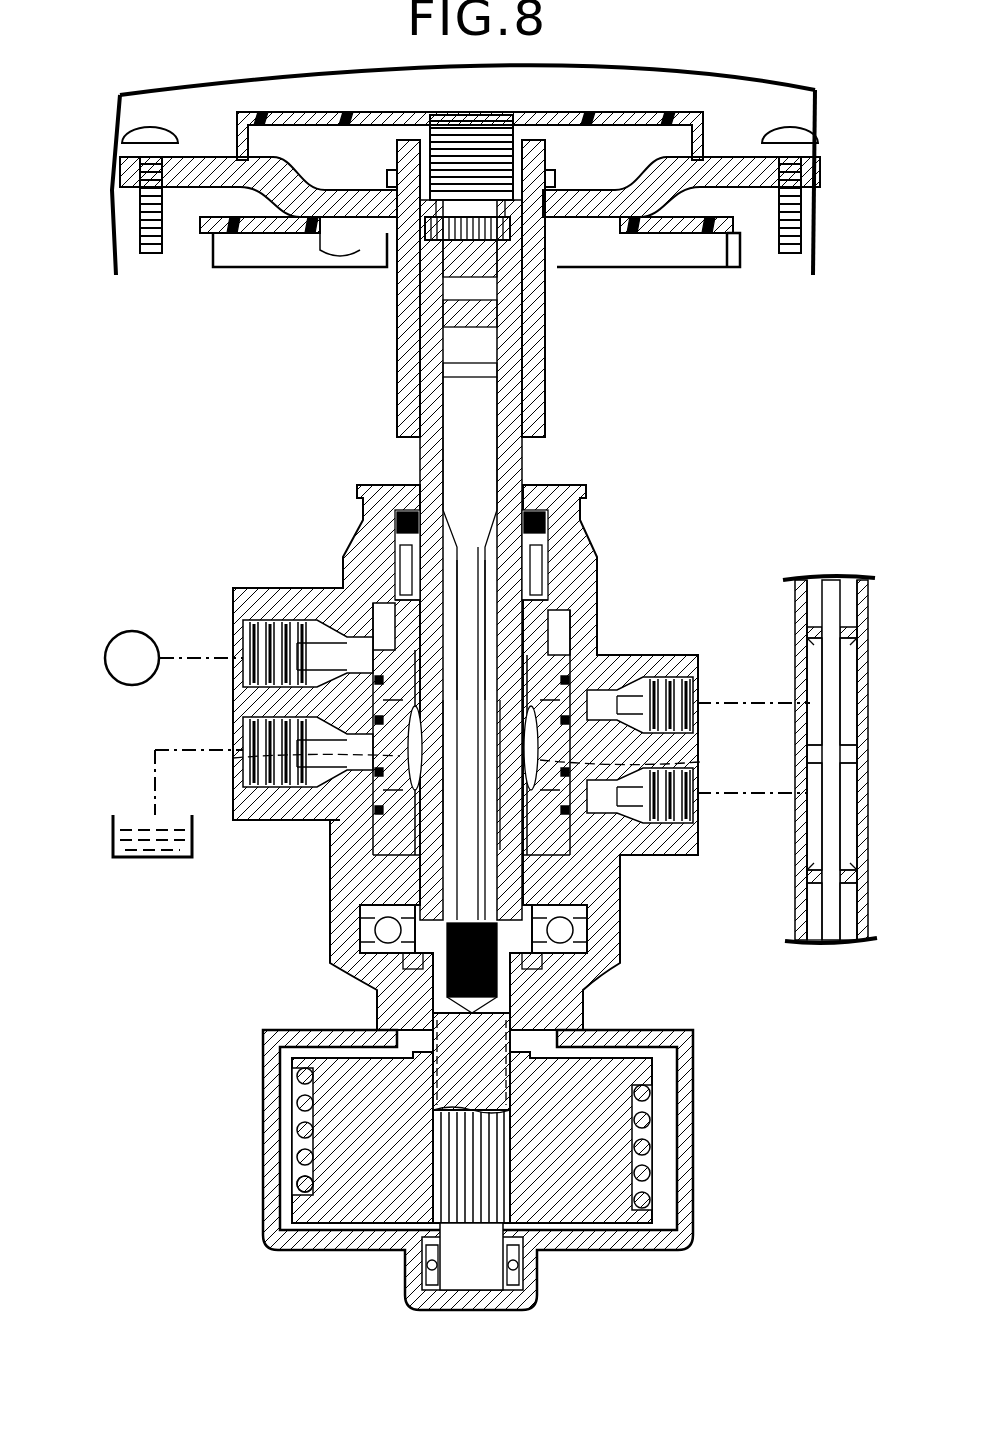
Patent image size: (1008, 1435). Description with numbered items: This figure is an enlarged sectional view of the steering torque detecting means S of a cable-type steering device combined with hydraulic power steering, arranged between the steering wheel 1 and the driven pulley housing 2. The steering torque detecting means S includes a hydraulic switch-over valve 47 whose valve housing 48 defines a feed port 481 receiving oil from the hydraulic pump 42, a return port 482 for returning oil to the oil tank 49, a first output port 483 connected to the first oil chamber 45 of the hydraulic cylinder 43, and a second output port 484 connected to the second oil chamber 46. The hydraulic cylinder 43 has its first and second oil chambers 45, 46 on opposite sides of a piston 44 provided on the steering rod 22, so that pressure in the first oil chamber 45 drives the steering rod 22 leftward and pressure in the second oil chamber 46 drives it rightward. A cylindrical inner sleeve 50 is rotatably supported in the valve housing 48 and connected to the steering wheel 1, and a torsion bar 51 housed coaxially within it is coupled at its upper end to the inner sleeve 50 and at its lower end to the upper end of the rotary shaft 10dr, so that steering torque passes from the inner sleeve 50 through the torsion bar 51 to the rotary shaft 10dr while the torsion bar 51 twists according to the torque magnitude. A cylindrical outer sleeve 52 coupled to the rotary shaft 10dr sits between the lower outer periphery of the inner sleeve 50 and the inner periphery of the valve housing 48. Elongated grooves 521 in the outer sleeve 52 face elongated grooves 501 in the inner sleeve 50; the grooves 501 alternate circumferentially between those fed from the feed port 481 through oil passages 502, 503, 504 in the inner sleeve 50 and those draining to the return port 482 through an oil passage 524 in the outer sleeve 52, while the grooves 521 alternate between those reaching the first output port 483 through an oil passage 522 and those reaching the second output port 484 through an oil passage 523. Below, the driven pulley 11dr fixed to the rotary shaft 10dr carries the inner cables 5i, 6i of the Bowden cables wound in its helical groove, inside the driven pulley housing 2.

The steering wheel 1 is at (300, 274).
The driven pulley housing 2 is at (683, 1098).
The steering torque detecting means S is at (670, 573).
The inner sleeve 50 is at (510, 470).
The torsion bar 51 is at (552, 623).
The hydraulic switch-over valve 47 is at (385, 645).
The valve housing 48 is at (270, 586).
The feed port 481 is at (237, 633).
The return port 482 is at (238, 717).
The first output port 483 is at (699, 720).
The second output port 484 is at (697, 808).
The outer sleeve 52 is at (366, 864).
The elongated grooves of the inner sleeve 501 is at (370, 859).
The oil passage 502 is at (530, 623).
The oil passage 503 is at (472, 688).
The oil passage 504 is at (430, 750).
The elongated grooves of the outer sleeve 521 is at (377, 779).
The oil passage 522 is at (585, 691).
The oil passage 523 is at (585, 841).
The oil passage 524 is at (463, 780).
The hydraulic pump 42 is at (121, 632).
The oil tank 49 is at (160, 858).
The hydraulic cylinder 43 is at (817, 947).
The steering rod 22 is at (827, 610).
The piston 44 is at (805, 816).
The first oil chamber 45 is at (810, 663).
The second oil chamber 46 is at (812, 858).
The driven pulley 11dr is at (600, 1058).
The inner cable 6i is at (296, 1078).
The inner cable 5i is at (296, 1182).
The rotary shaft 10dr is at (477, 1262).